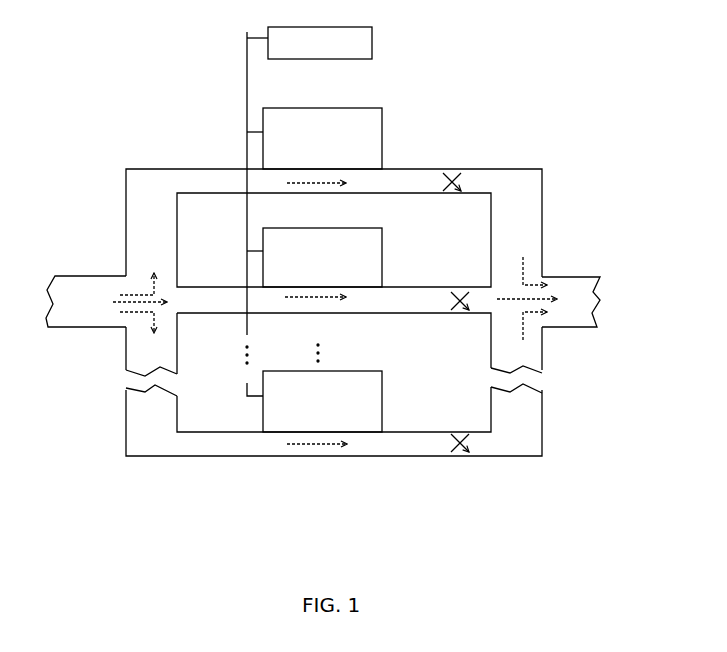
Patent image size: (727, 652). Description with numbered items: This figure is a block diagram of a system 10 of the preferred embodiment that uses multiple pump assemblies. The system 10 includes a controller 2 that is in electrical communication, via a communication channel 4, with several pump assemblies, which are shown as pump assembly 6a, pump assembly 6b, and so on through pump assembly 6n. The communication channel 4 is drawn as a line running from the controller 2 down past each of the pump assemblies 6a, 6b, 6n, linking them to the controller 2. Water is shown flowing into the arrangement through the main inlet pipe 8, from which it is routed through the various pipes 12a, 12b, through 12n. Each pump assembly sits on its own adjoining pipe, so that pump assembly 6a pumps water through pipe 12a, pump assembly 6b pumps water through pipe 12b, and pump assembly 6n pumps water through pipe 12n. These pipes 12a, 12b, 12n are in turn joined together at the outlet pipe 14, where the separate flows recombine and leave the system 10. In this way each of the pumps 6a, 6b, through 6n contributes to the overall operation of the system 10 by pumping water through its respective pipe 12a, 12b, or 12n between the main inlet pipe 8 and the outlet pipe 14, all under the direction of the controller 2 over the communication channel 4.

The controller 2 is at (365, 36).
The communication channel 4 is at (247, 40).
The pump assembly 6a is at (375, 116).
The pump assembly 6b is at (375, 238).
The pump assembly 6n is at (375, 378).
The main inlet pipe 8 is at (66, 279).
The system 10 is at (565, 64).
The pipe 12a is at (252, 188).
The pipe 12b is at (257, 304).
The pipe 12n is at (251, 449).
The outlet pipe 14 is at (582, 283).